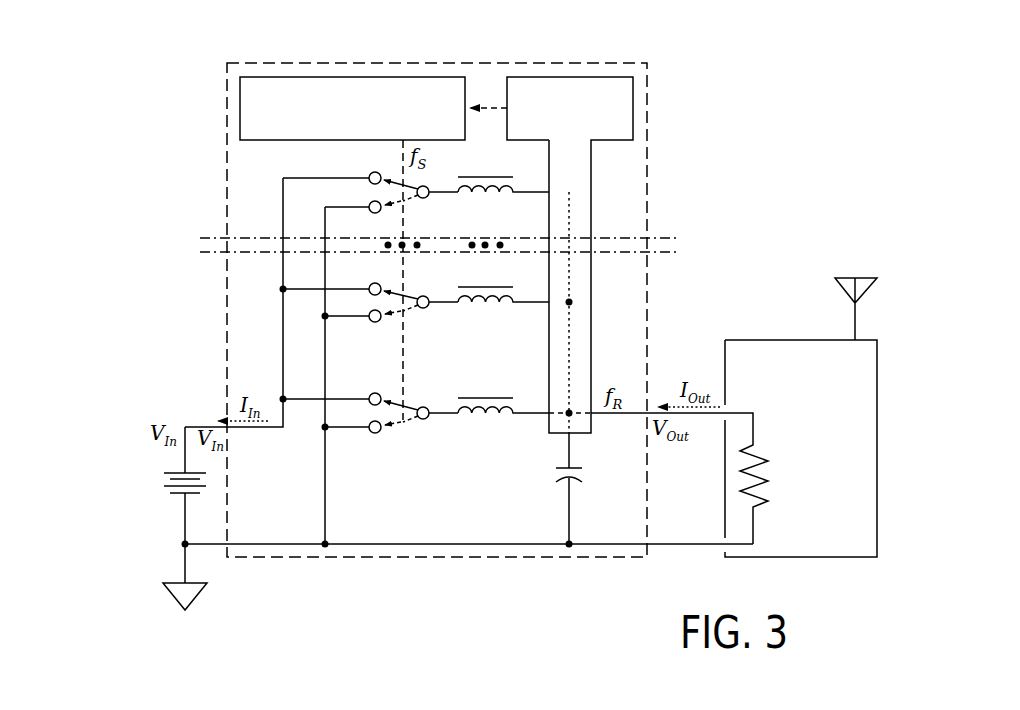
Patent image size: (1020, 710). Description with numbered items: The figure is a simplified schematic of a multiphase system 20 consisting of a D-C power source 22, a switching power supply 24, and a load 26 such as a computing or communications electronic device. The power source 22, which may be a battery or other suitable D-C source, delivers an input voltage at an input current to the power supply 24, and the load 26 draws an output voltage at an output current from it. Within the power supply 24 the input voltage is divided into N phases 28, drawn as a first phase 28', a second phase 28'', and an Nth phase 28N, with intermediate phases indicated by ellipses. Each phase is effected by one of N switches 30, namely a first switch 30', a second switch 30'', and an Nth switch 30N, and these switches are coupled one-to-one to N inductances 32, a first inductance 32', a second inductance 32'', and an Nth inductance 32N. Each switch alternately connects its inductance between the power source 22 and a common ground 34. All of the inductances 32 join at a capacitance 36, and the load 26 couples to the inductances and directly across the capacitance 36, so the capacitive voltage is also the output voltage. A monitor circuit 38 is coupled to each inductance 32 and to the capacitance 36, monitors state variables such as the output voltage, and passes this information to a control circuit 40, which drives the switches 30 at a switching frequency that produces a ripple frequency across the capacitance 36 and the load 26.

The multiphase system 20 is at (576, 627).
The D-C power source 22 is at (178, 496).
The switching power supply 24 is at (345, 557).
The load 26 is at (765, 340).
The phases 28 is at (61, 637).
The Nth phase 28N is at (152, 192).
The second phase 28'' is at (211, 302).
The first phase 28' is at (211, 413).
The switches 30 is at (451, 636).
The Nth switch 30N is at (425, 198).
The second switch 30'' is at (431, 313).
The first switch 30' is at (429, 424).
The inductances 32 is at (506, 636).
The Nth inductance 32N is at (483, 177).
The second inductance 32'' is at (503, 278).
The first inductance 32' is at (503, 388).
The ground 34 is at (175, 580).
The capacitance 36 is at (563, 481).
The monitor circuit 38 is at (545, 77).
The control circuit 40 is at (387, 77).